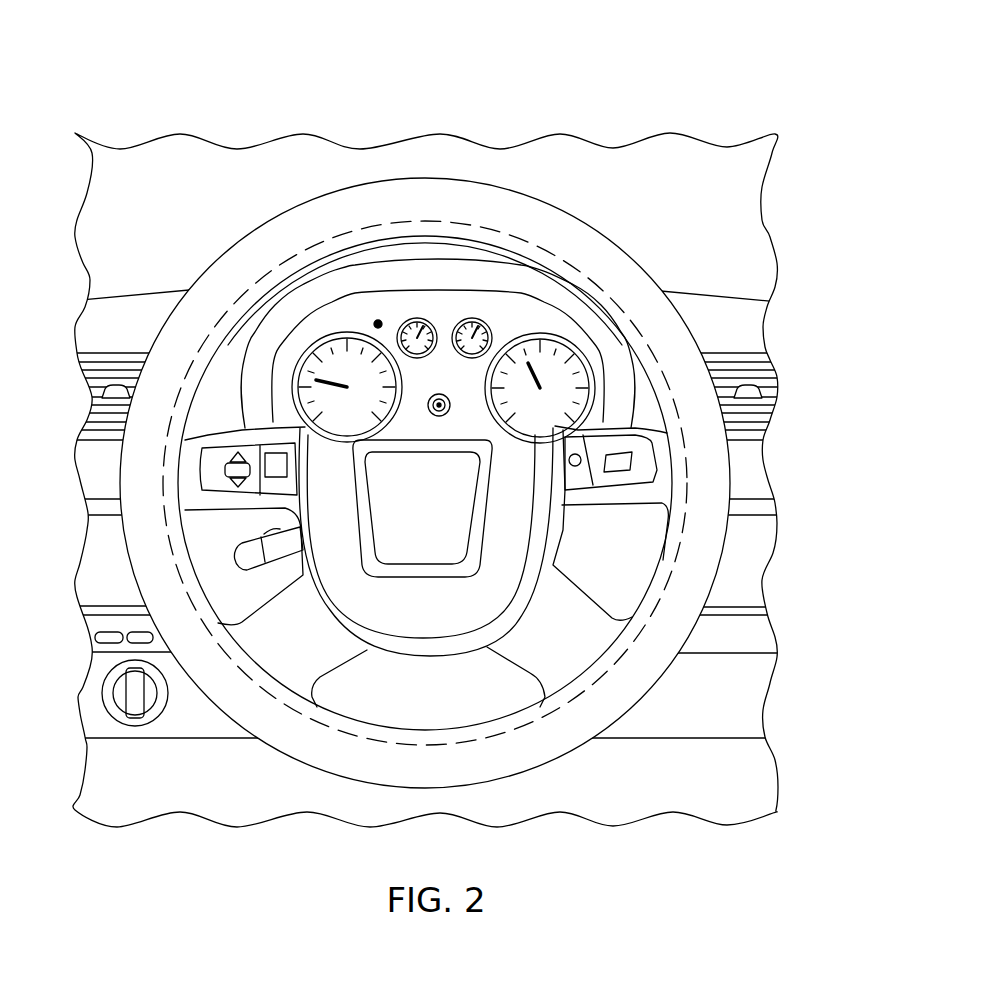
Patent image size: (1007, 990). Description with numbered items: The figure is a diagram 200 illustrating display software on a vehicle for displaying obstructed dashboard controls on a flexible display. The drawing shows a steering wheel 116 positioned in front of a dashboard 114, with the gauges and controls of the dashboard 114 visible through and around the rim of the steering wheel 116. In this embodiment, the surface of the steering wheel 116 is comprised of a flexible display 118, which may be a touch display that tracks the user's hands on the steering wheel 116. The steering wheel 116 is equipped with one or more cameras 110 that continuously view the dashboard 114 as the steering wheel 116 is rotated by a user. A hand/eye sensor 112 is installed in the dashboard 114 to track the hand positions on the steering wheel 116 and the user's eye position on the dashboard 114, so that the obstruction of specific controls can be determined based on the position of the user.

The diagram 200 is at (712, 47).
The camera 110 is at (439, 417).
The hand/eye sensor 112 is at (377, 321).
The dashboard 114 is at (507, 304).
The steering wheel 116 is at (443, 178).
The flexible display 118 is at (480, 425).